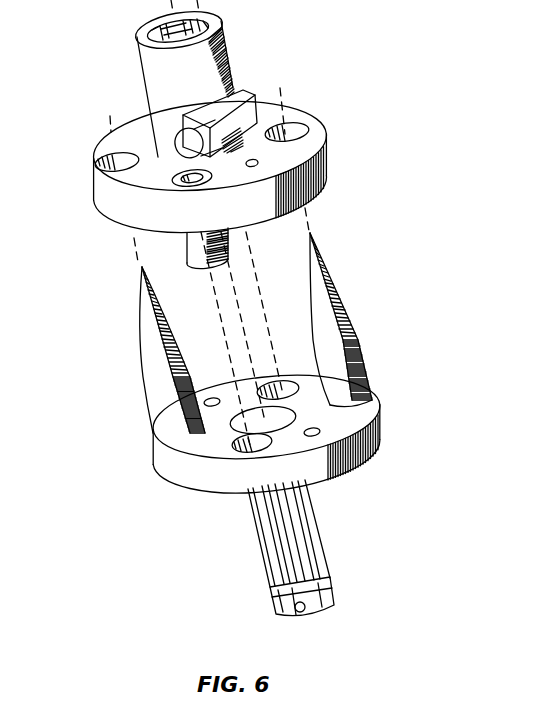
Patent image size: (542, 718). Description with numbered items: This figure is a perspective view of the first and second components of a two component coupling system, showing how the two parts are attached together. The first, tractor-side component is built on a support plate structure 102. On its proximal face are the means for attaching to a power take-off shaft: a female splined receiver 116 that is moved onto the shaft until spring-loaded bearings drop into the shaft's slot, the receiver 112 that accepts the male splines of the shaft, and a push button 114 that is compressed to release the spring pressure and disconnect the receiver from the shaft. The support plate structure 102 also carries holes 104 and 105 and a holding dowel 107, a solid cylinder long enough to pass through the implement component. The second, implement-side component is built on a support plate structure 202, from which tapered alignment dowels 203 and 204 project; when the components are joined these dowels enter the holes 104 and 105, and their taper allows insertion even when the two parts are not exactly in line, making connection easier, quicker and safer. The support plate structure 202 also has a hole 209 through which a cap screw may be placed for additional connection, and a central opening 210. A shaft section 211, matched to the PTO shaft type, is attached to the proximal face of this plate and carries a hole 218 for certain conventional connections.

The support plate structure 102 is at (135, 216).
The hole 104 is at (318, 125).
The hole 105 is at (98, 156).
The holding dowel 107 is at (190, 246).
The receiver 112 is at (243, 98).
The push button 114 is at (160, 158).
The female splined receiver 116 is at (142, 88).
The support plate structure 202 is at (200, 478).
The alignment dowel 203 is at (145, 311).
The alignment dowel 204 is at (340, 282).
The hole 209 is at (208, 406).
The central opening 210 is at (240, 427).
The shaft section 211 is at (318, 527).
The hole 218 is at (301, 615).